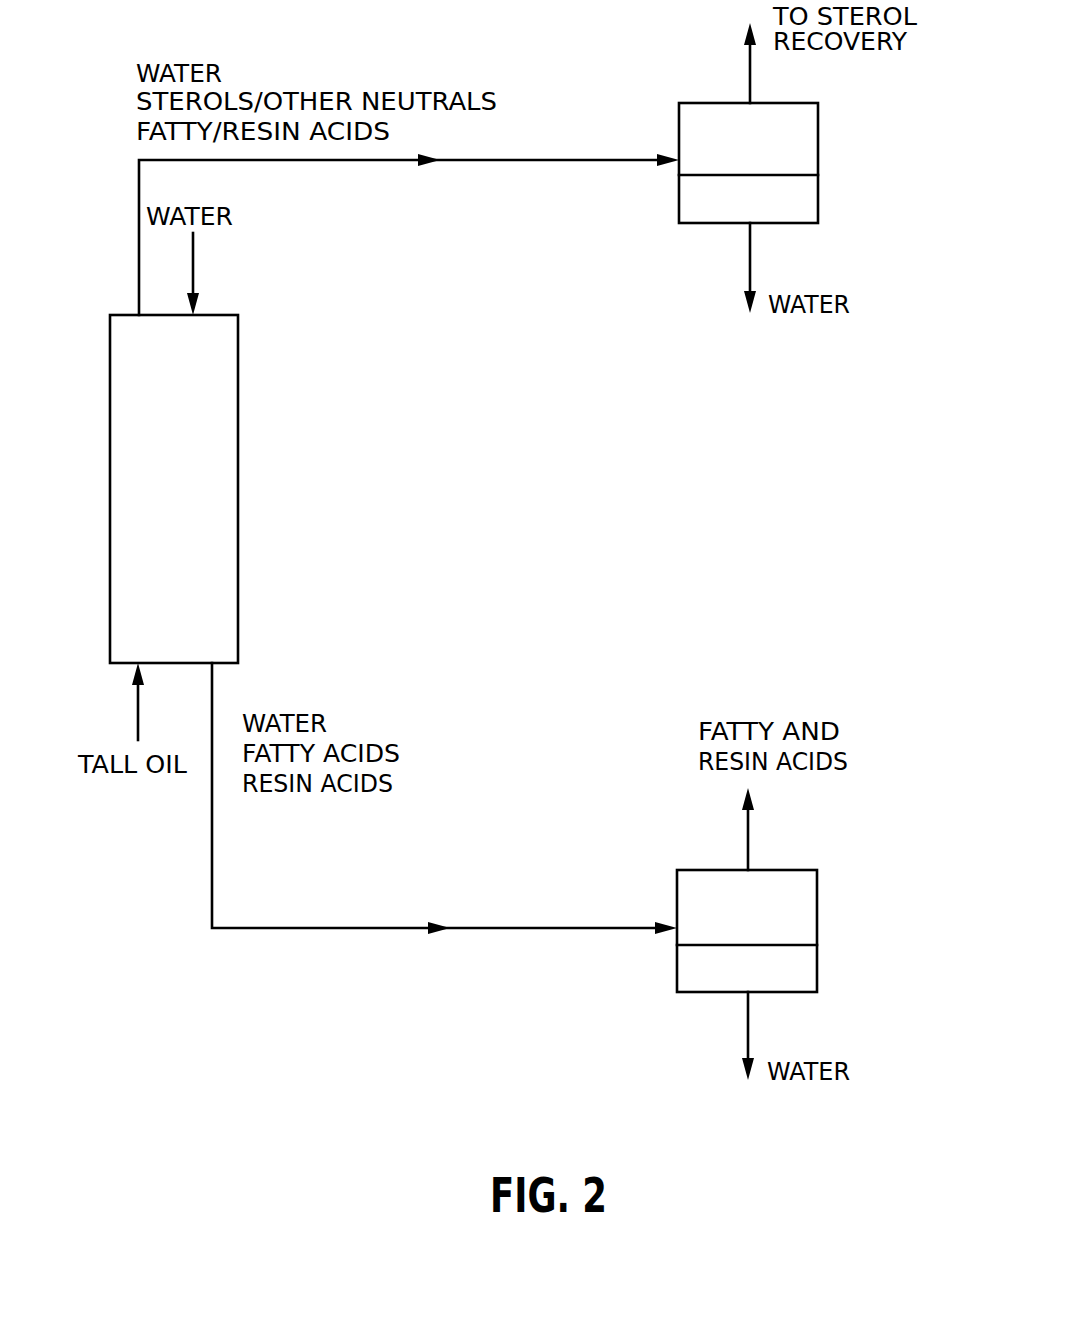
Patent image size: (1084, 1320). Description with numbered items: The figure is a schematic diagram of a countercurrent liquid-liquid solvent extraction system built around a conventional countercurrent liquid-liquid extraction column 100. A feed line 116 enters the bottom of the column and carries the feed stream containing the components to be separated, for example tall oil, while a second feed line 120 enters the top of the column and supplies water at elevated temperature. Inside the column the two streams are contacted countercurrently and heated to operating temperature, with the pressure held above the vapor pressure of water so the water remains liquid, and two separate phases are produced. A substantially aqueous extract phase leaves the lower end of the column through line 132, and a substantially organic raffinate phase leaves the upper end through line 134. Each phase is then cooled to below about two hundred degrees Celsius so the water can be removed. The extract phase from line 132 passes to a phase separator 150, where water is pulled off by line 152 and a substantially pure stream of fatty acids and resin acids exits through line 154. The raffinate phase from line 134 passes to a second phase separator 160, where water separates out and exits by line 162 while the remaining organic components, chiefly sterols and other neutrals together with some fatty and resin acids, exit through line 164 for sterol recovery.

The countercurrent liquid-liquid extraction column 100 is at (262, 428).
The feed line 116 is at (138, 710).
The feed line 120 is at (193, 262).
The line 132 is at (212, 832).
The line 134 is at (139, 240).
The phase separator 150 is at (855, 895).
The line 152 is at (748, 1032).
The line 154 is at (748, 835).
The phase separator 160 is at (856, 131).
The line 162 is at (750, 258).
The line 164 is at (750, 83).